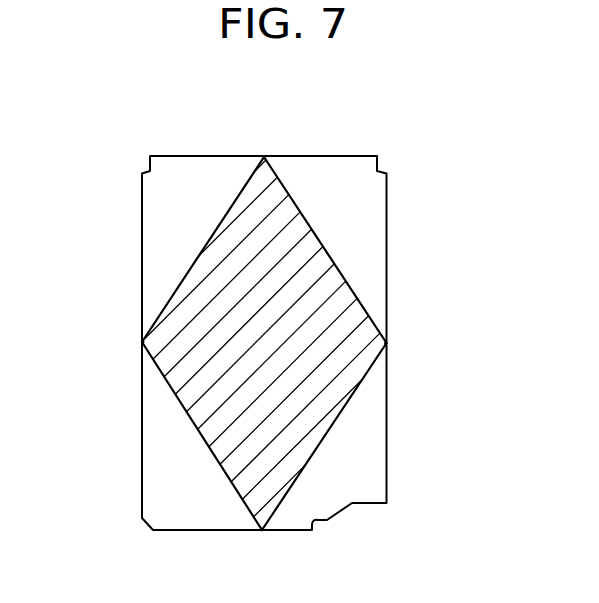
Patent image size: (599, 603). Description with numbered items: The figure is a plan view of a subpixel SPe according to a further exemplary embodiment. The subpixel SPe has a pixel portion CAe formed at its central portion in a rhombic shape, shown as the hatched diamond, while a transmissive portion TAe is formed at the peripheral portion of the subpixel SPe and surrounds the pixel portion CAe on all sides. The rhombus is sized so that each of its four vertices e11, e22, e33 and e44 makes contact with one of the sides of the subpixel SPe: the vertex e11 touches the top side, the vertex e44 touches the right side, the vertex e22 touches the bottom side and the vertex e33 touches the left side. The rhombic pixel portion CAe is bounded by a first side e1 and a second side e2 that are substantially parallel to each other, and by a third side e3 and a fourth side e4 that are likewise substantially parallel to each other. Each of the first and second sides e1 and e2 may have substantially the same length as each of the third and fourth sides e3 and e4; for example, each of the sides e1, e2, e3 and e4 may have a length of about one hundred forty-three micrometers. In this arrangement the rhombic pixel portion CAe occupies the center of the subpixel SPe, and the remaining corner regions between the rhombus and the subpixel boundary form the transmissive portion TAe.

The subpixel SPe is at (136, 140).
The transmissive portion TAe is at (163, 457).
The pixel portion CAe is at (228, 273).
The first side e1 is at (222, 212).
The second side e2 is at (302, 471).
The third side e3 is at (224, 470).
The fourth side e4 is at (303, 216).
The vertex e11 is at (264, 157).
The vertex e22 is at (262, 530).
The vertex e33 is at (142, 342).
The vertex e44 is at (386, 343).